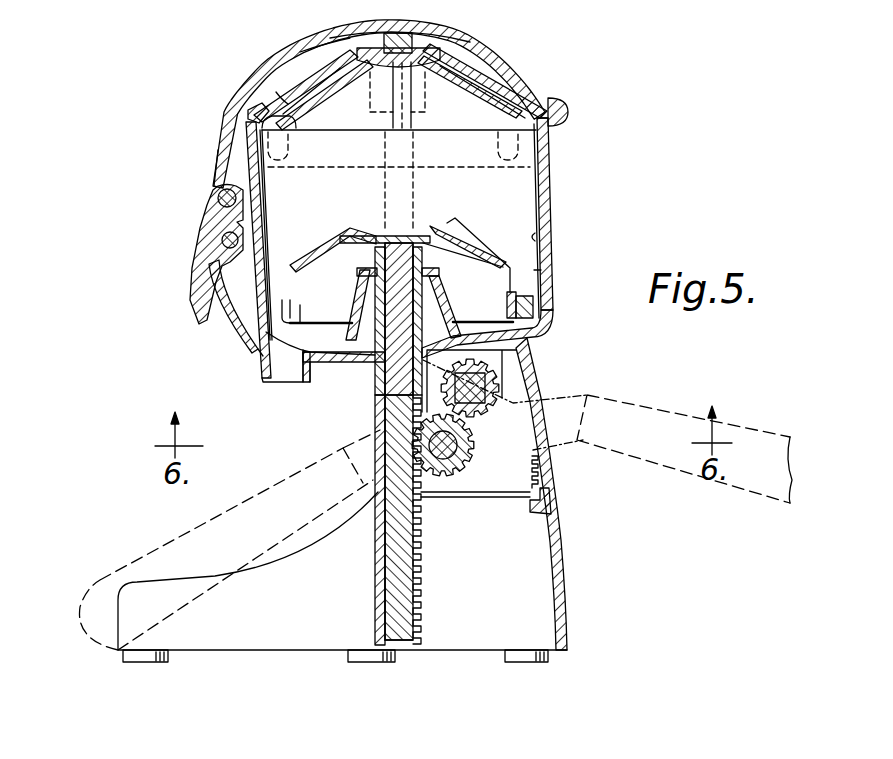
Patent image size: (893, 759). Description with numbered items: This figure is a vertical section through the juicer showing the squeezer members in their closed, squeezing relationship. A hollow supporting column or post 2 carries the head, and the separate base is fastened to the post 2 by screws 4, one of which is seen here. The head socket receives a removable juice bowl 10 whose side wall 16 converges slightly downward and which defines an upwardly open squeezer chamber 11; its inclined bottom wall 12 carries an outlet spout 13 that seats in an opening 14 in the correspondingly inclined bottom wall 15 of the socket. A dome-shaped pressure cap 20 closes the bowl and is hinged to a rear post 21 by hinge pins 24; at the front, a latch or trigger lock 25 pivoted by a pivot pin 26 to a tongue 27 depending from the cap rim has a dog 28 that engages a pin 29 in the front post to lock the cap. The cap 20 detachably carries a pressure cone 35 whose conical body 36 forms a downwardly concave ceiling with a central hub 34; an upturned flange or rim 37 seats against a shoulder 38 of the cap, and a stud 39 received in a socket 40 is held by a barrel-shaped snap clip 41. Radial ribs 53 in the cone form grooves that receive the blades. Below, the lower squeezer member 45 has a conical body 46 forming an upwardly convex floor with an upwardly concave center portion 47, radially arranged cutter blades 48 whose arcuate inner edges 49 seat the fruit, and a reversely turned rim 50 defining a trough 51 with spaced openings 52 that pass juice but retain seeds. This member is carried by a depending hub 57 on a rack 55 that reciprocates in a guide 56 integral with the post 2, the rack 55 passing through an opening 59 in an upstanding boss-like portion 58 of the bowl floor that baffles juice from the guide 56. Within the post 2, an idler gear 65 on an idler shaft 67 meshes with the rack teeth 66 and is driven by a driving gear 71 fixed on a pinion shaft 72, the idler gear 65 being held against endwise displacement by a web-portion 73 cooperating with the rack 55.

The supporting column or post 2 is at (533, 450).
The screws 4 is at (550, 516).
The juice bowl or cup 10 is at (553, 195).
The squeezer chamber 11 is at (550, 222).
The bottom wall 12 is at (322, 366).
The outlet spout 13 is at (262, 382).
The opening 14 is at (262, 360).
The bottom wall of the socket 15 is at (360, 363).
The side wall 16 is at (537, 240).
The pressure cap 20 is at (494, 68).
The rear post 21 is at (557, 157).
The hinge pins 24 is at (562, 108).
The latch or trigger lock 25 is at (200, 252).
The pivot pin 26 is at (219, 196).
The tongue 27 is at (222, 140).
The dog 28 is at (207, 284).
The pin 29 is at (222, 237).
The center or hub 34 is at (460, 78).
The squeezer element or pressure cone 35 is at (472, 100).
The conical body 36 is at (326, 104).
The upturned flange or rim 37 is at (270, 106).
The shoulder 38 is at (247, 116).
The stud 39 is at (384, 36).
The socket 40 is at (314, 46).
The spring ring or snap clip 41 is at (440, 31).
The lower squeezer member 45 is at (510, 270).
The conical body 46 is at (322, 268).
The center portion 47 is at (395, 238).
The knives or cutter blades 48 is at (482, 268).
The arcuate inner end edges 49 is at (433, 223).
The reversely turned rim 50 is at (532, 302).
The trough 51 is at (547, 273).
The spaced openings 52 is at (285, 328).
The ribs 53 is at (280, 95).
The rack 55 is at (398, 390).
The guide 56 is at (527, 342).
The depending hub or socket 57 is at (367, 263).
The upstanding boss-like portion 58 is at (443, 297).
The opening 59 is at (388, 240).
The idler gear 65 is at (463, 473).
The teeth of the rack 66 is at (422, 600).
The idler shaft 67 is at (458, 450).
The driving gear 71 is at (507, 373).
The pinion shaft 72 is at (513, 403).
The web-portion 73 is at (437, 480).